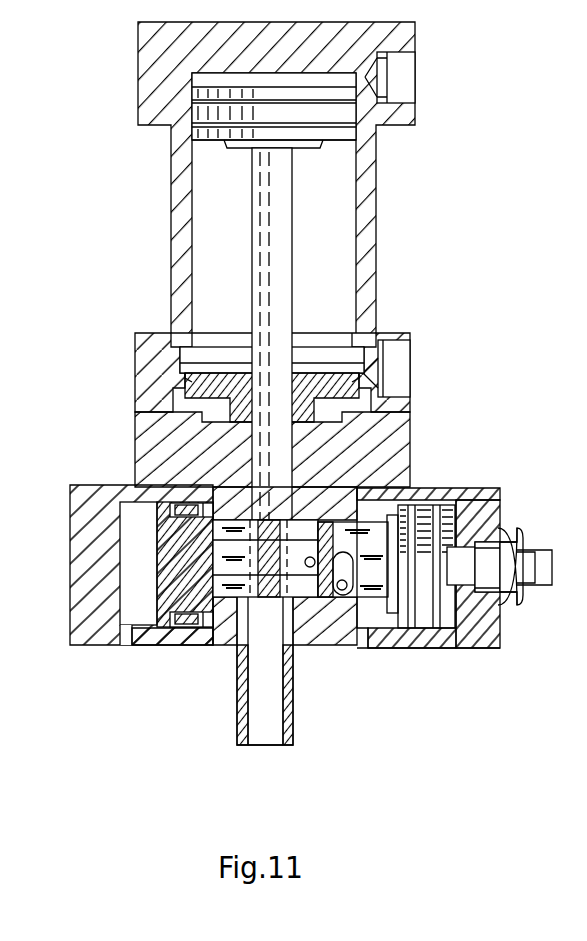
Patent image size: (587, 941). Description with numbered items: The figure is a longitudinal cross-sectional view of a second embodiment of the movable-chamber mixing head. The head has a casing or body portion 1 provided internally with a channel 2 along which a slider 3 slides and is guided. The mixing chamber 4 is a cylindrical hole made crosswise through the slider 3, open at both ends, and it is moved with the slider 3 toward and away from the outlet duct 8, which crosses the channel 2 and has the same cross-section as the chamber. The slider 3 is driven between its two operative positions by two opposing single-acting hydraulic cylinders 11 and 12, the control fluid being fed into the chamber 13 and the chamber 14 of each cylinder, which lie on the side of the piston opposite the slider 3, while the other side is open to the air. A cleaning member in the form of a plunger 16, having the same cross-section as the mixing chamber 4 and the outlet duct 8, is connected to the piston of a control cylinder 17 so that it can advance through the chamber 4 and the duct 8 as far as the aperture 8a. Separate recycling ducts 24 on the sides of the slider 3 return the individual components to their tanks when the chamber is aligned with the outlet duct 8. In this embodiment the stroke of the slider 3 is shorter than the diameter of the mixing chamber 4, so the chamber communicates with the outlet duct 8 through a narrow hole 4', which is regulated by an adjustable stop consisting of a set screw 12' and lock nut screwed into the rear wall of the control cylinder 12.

The casing or body portion 1 is at (392, 447).
The channel 2 is at (352, 502).
The slider 3 is at (369, 570).
The mixing chamber 4 is at (266, 611).
The narrow hole 4' is at (198, 599).
The outlet duct 8 is at (258, 720).
The aperture 8a is at (273, 745).
The single-acting hydraulic cylinder 11 is at (88, 645).
The single-acting hydraulic cylinder 12 is at (478, 602).
The set screw 12' is at (530, 616).
The chamber 13 is at (140, 550).
The chamber 14 is at (460, 520).
The plunger 16 is at (277, 467).
The control cylinder 17 is at (185, 207).
The recycling ducts 24 is at (343, 567).